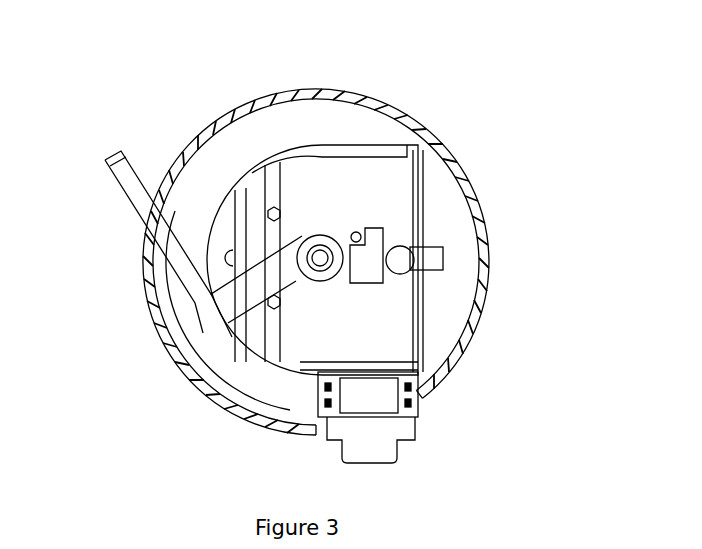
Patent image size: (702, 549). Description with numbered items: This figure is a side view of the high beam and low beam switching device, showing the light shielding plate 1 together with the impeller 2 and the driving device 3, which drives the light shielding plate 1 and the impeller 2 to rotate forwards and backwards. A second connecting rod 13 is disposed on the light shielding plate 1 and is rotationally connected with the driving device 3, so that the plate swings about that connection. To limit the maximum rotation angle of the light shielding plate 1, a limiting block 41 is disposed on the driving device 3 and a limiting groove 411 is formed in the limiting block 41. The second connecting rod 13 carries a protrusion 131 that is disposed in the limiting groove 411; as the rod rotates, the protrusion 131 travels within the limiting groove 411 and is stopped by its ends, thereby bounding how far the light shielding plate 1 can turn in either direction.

The light shielding plate 1 is at (245, 372).
The impeller 2 is at (330, 119).
The driving device 3 is at (332, 340).
The second connecting rod 13 is at (228, 300).
The protrusion 131 is at (358, 232).
The limiting block 41 is at (368, 228).
The limiting groove 411 is at (358, 250).